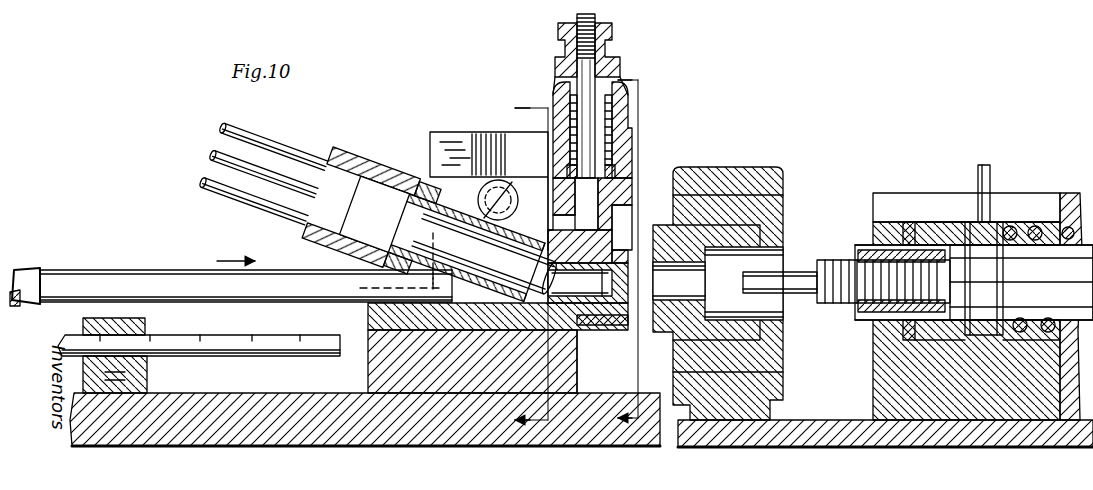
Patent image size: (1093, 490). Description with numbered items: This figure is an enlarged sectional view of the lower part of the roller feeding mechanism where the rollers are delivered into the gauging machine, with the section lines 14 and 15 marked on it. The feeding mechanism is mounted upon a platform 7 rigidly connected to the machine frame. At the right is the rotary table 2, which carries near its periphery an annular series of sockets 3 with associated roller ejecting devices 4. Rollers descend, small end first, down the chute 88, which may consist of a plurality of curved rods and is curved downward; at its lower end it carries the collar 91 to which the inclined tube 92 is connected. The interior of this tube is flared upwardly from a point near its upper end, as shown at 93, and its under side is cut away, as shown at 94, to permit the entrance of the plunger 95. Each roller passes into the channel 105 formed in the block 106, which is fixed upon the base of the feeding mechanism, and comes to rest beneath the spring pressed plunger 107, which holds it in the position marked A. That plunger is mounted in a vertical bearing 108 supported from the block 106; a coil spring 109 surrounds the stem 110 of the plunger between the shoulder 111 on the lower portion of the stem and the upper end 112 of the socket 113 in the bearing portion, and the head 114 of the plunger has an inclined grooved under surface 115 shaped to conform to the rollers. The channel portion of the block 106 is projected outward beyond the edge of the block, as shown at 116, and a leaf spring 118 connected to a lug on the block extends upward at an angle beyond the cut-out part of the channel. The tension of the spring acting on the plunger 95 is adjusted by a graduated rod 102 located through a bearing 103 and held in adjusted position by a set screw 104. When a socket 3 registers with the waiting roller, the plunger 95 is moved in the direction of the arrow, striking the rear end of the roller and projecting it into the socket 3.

The rotary table 2 is at (830, 420).
The socket 3 is at (735, 293).
The roller ejecting device 4 is at (927, 202).
The platform 7 is at (352, 404).
The section line 14— 14 is at (640, 251).
The section line 15— 15 is at (544, 263).
The chute 88 is at (273, 145).
The collar 91 is at (362, 170).
The inclined tube 92 is at (396, 176).
The flared interior 93 is at (375, 214).
The cut-away portion 94 is at (448, 225).
The plunger 95 is at (176, 284).
The graduated rod 102 is at (258, 350).
The bearing 103 is at (148, 371).
The set screw 104 is at (120, 345).
The channel 105 is at (483, 261).
The block 106 is at (374, 307).
The spring pressed plunger 107 is at (625, 180).
The vertical bearing 108 is at (612, 72).
The coil spring 109 is at (618, 118).
The stem 110 is at (583, 70).
The shoulder 111 is at (570, 170).
The upper end of socket 112 is at (562, 92).
The socket 113 is at (570, 130).
The head 114 is at (626, 240).
The inclined grooved under surface 115 is at (616, 300).
The projected channel portion 116 is at (586, 324).
The leaf spring 118 is at (582, 332).